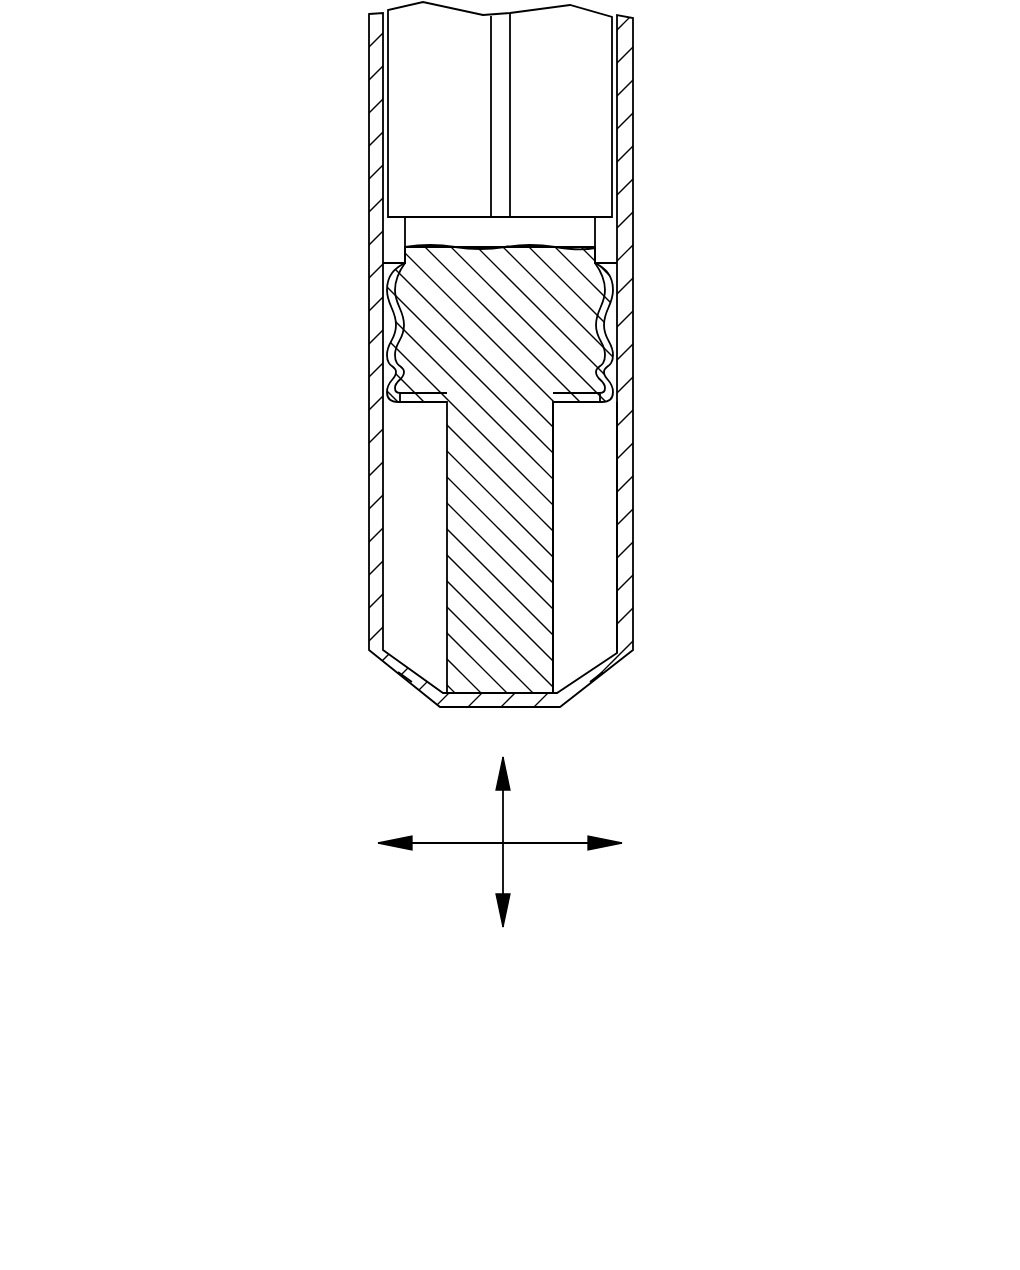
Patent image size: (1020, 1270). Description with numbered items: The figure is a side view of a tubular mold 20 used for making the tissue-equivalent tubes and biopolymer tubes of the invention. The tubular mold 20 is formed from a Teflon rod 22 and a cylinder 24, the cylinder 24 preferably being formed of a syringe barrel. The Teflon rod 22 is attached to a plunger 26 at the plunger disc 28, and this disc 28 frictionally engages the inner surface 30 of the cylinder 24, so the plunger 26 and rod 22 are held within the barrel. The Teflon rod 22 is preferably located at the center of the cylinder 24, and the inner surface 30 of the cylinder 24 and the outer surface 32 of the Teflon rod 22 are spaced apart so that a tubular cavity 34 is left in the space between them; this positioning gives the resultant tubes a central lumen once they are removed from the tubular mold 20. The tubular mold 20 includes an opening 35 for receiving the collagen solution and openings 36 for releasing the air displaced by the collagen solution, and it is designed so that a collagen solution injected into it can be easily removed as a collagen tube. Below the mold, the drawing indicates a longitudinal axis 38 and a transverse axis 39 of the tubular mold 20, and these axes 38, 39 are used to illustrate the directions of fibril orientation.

The tubular mold 20 is at (262, 75).
The Teflon rod 22 is at (518, 517).
The cylinder 24 is at (335, 462).
The plunger 26 is at (598, 105).
The plunger disc 28 is at (550, 312).
The inner surface 30 is at (618, 458).
The outer surface 32 is at (553, 575).
The tubular cavity 34 is at (593, 632).
The opening 35 is at (404, 688).
The openings 36 is at (600, 688).
The longitudinal axis 38 is at (503, 868).
The transverse axis 39 is at (555, 843).